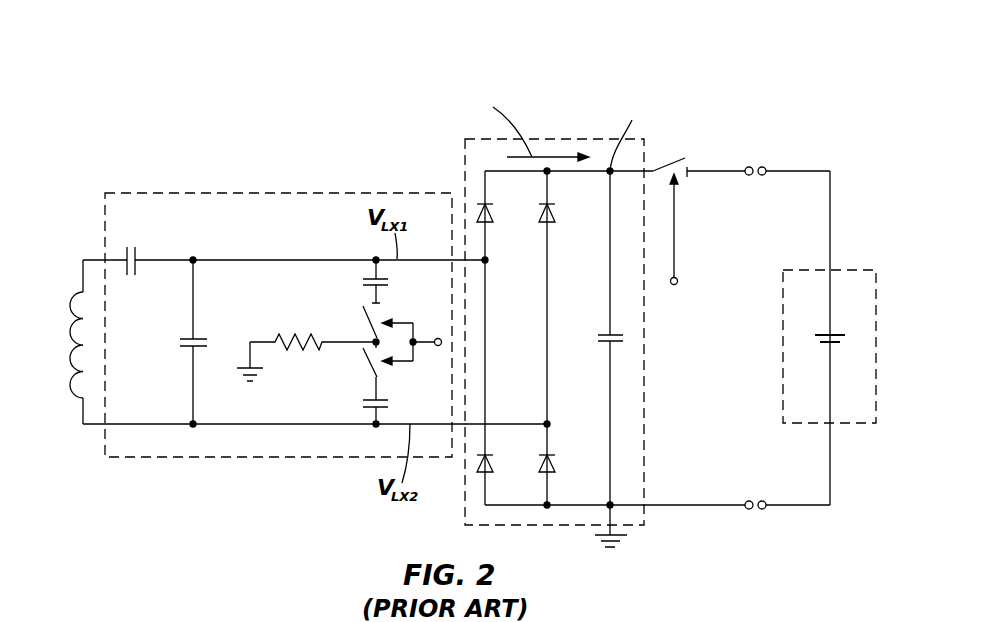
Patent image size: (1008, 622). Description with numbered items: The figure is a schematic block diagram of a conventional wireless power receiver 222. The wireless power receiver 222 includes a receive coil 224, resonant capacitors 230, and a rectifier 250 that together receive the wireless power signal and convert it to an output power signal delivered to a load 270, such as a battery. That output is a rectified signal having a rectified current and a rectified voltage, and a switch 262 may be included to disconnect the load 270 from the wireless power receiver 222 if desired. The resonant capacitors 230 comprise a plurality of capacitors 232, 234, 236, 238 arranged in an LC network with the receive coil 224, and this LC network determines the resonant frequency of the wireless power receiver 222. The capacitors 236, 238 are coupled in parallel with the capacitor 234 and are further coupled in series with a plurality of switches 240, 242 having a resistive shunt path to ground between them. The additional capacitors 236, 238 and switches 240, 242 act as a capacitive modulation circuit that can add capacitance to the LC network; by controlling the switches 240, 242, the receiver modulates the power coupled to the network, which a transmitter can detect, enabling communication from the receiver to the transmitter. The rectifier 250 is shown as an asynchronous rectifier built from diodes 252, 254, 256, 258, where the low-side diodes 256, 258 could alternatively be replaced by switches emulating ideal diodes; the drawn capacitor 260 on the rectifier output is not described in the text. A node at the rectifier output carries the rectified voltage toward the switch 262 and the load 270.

The wireless power receiver 222 is at (700, 68).
The receive coil 224 is at (72, 383).
The resonant capacitors 230 is at (250, 193).
The capacitor 232 is at (138, 252).
The capacitor 234 is at (205, 338).
The capacitor 236 is at (363, 283).
The capacitor 238 is at (363, 398).
The switch 240 is at (367, 324).
The switch 242 is at (367, 362).
The rectifier 250 is at (562, 139).
The diode 252 is at (490, 223).
The diode 254 is at (553, 223).
The low-side diode 256 is at (493, 470).
The low-side diode 258 is at (557, 470).
The output capacitor C 260 is at (603, 342).
The switch 262 is at (680, 157).
The load 270 is at (863, 270).